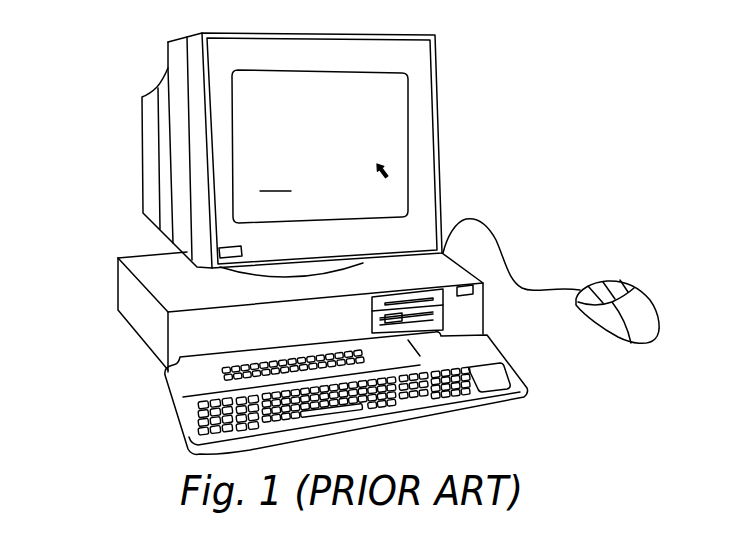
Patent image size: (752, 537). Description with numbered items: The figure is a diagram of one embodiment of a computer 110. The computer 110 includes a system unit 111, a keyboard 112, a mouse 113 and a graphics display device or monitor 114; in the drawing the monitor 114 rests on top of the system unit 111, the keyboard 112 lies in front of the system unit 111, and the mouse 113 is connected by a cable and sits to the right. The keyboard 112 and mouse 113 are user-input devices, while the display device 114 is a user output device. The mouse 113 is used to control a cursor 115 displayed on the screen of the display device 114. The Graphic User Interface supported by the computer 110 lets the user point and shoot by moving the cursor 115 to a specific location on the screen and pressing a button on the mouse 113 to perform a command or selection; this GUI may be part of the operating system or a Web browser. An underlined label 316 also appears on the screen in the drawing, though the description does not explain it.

The computer 110 is at (98, 195).
The system unit 111 is at (118, 287).
The keyboard 112 is at (162, 396).
The mouse 113 is at (630, 282).
The graphics display device 114 is at (438, 98).
The cursor 115 is at (376, 163).
The displayed reference number on screen 316 is at (276, 182).